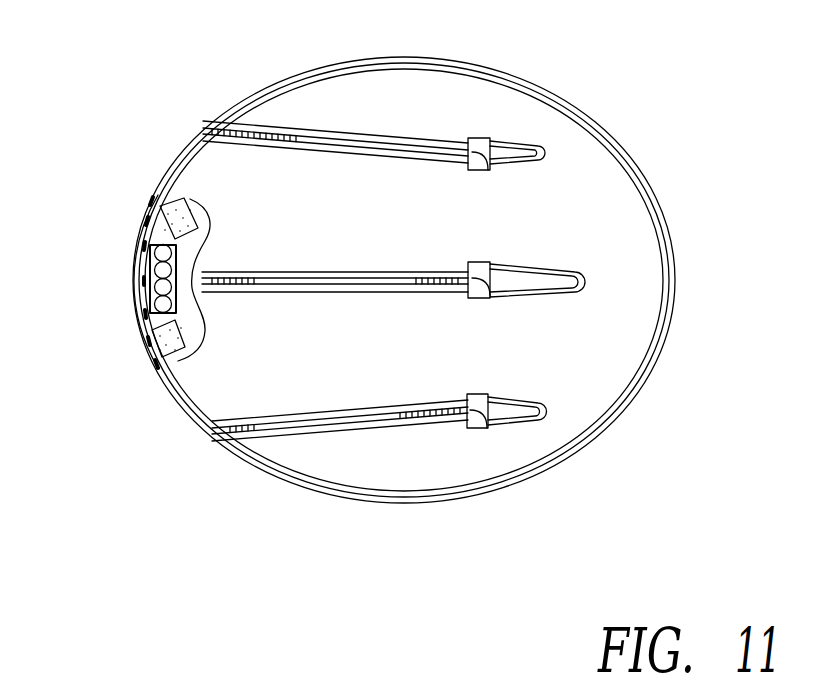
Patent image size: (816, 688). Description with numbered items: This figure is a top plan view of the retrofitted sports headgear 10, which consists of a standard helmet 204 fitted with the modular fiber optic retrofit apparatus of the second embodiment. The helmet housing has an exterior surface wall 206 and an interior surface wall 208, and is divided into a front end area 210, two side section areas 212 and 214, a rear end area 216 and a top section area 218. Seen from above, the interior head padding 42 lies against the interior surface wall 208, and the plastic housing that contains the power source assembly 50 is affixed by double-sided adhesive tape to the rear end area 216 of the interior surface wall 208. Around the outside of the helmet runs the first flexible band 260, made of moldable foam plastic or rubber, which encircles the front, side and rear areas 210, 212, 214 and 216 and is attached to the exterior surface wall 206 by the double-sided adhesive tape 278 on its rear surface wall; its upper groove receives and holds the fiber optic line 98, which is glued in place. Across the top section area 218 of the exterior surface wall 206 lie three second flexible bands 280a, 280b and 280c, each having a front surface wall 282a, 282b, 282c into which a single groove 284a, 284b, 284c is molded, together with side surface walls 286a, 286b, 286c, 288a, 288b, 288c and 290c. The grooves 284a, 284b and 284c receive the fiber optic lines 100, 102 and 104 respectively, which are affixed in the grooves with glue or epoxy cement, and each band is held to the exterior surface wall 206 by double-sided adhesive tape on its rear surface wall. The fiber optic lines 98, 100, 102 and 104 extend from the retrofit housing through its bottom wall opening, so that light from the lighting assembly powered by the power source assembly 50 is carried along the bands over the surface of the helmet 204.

The sports headgear 10 is at (172, 108).
The interior head padding 42 is at (175, 208).
The power source assembly 50 is at (153, 276).
The fiber optic line 98 is at (608, 136).
The fiber optic line 100 is at (379, 411).
The fiber optic line 102 is at (393, 269).
The fiber optic line 104 is at (387, 143).
The standard helmet 204 is at (598, 226).
The exterior surface wall 206 is at (558, 102).
The interior surface wall 208 is at (150, 222).
The front end area 210 is at (613, 260).
The side section area 212 is at (387, 473).
The side section area 214 is at (392, 98).
The rear end area 216 is at (160, 315).
The top section area 218 is at (428, 218).
The first flexible band 260 is at (490, 492).
The double-sided adhesive tape 278 is at (622, 400).
The second flexible band 280a is at (432, 394).
The second flexible band 280b is at (406, 258).
The second flexible band 280c is at (468, 134).
The front surface wall 282a is at (343, 417).
The front surface wall 282b is at (337, 272).
The front surface wall 282c is at (453, 129).
The groove 284a is at (305, 420).
The groove 284b is at (313, 272).
The groove 284c is at (376, 150).
The side surface wall 286a is at (230, 420).
The side surface wall 286b is at (263, 272).
The side surface wall 286c is at (283, 130).
The side surface wall 288a is at (270, 440).
The side surface wall 288b is at (225, 293).
The side surface wall 288c is at (303, 153).
The side surface wall 290c is at (486, 170).